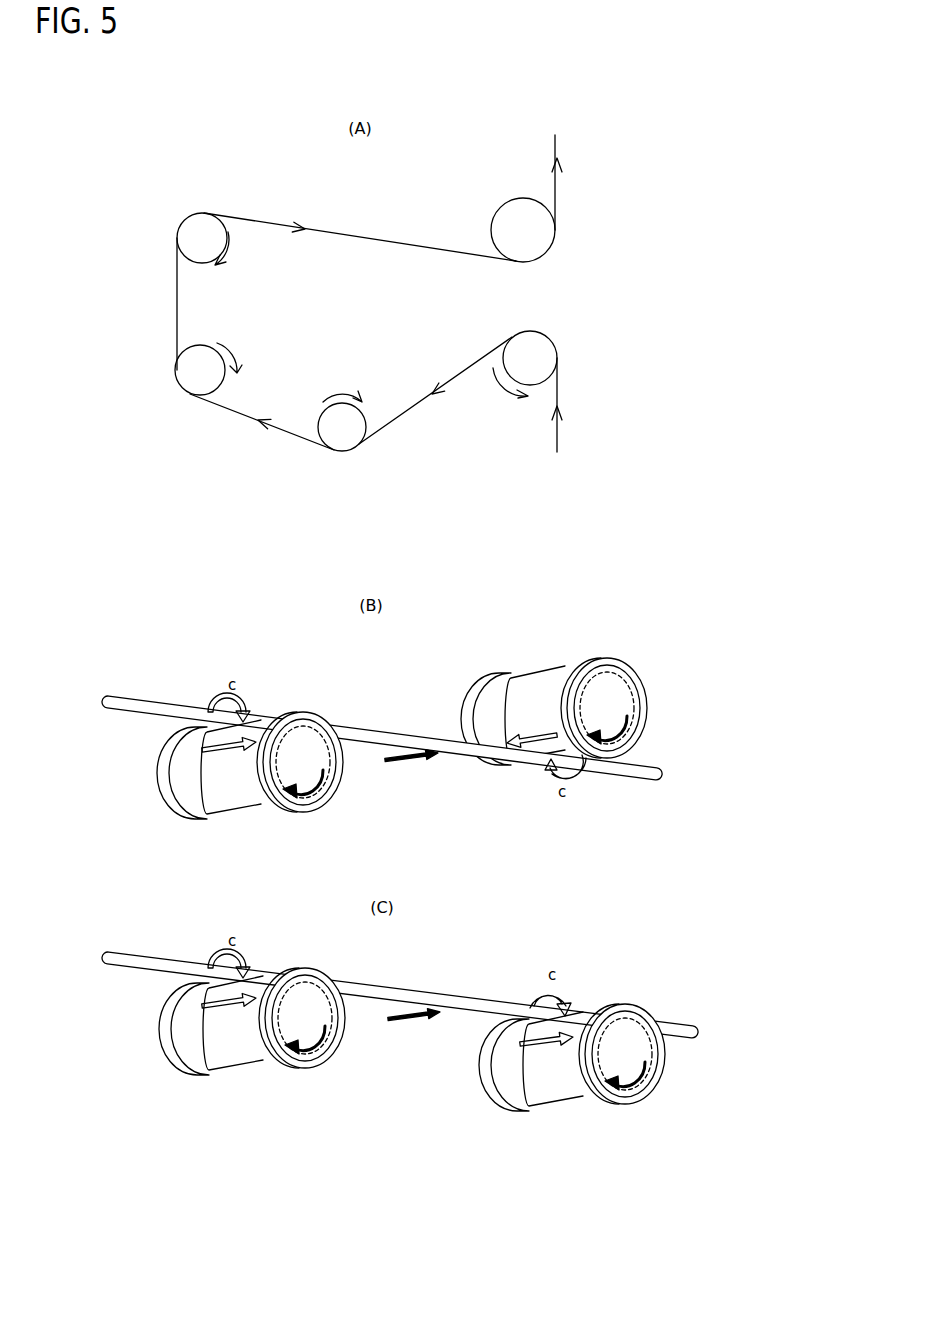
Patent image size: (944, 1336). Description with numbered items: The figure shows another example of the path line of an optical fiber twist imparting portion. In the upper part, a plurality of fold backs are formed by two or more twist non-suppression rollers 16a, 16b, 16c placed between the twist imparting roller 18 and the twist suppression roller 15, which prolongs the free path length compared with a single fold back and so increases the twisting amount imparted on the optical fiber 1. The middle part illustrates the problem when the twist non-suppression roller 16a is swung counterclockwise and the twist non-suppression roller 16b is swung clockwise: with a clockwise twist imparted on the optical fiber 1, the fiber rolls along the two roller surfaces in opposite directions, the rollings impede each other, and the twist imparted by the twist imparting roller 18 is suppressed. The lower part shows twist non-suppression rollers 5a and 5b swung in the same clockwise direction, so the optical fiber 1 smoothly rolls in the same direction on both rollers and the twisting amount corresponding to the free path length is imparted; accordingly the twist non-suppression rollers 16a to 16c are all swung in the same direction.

The optical fiber 1 is at (407, 240).
The twist suppression roller 15 is at (545, 342).
The twist non-suppression roller 16a is at (183, 226).
The twist non-suppression roller 16b is at (181, 382).
The twist non-suppression roller 16c is at (358, 448).
The twist imparting roller 18 is at (541, 245).
The twist non-suppression roller 5a is at (567, 1104).
The twist non-suppression roller 5b is at (255, 1068).